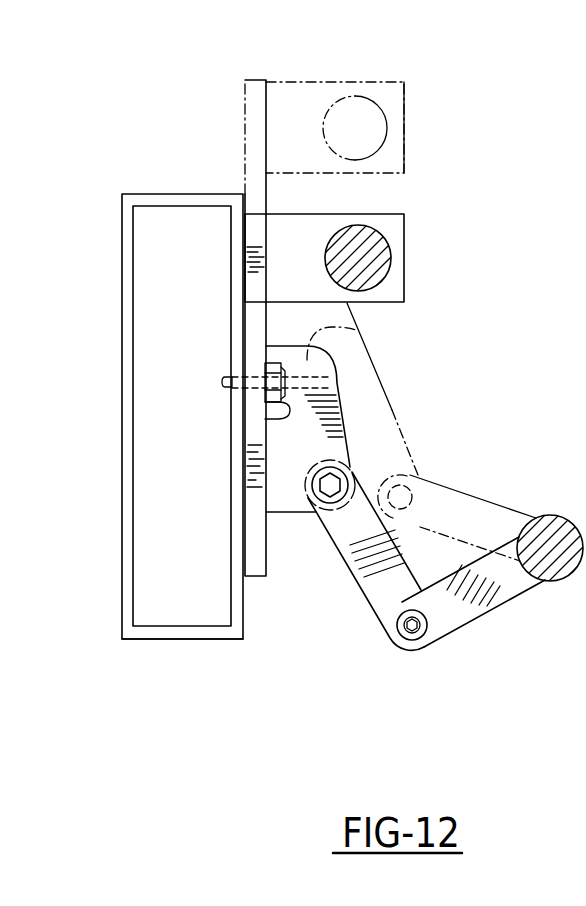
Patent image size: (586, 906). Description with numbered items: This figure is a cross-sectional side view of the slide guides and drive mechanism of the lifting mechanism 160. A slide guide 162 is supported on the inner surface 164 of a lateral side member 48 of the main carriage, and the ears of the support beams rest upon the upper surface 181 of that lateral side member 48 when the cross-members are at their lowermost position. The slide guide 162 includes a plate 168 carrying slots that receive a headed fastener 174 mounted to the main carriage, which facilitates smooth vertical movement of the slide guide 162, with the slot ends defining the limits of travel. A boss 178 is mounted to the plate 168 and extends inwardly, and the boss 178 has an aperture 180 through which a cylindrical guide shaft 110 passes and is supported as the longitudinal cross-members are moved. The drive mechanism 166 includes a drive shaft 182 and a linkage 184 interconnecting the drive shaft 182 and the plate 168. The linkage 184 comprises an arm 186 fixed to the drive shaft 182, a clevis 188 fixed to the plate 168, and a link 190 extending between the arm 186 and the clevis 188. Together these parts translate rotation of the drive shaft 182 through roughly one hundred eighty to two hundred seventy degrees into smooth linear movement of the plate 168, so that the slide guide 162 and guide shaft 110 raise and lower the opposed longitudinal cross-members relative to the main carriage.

The lateral side member 48 is at (125, 343).
The guide shaft 110 is at (384, 273).
The lifting mechanism 160 is at (532, 136).
The slide guide 162 is at (249, 347).
The inner surface 164 is at (243, 617).
The drive mechanism 166 is at (564, 432).
The plate 168 is at (249, 106).
The headed fastener 174 is at (287, 414).
The boss 178 is at (303, 100).
The aperture 180 is at (384, 117).
The upper surface 181 is at (175, 195).
The drive shaft 182 is at (549, 582).
The linkage 184 is at (358, 650).
The arm 186 is at (518, 505).
The clevis 188 is at (331, 381).
The link 190 is at (397, 450).